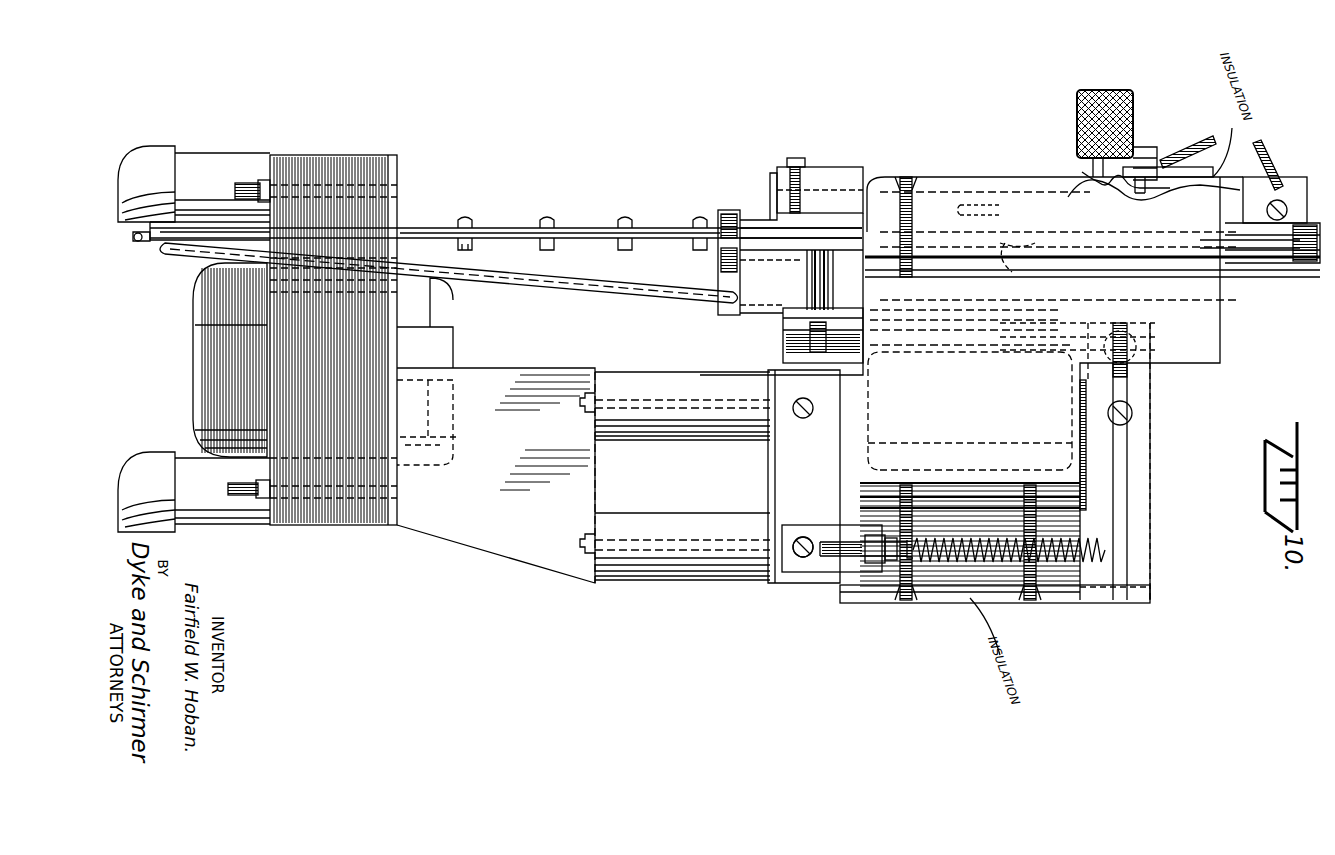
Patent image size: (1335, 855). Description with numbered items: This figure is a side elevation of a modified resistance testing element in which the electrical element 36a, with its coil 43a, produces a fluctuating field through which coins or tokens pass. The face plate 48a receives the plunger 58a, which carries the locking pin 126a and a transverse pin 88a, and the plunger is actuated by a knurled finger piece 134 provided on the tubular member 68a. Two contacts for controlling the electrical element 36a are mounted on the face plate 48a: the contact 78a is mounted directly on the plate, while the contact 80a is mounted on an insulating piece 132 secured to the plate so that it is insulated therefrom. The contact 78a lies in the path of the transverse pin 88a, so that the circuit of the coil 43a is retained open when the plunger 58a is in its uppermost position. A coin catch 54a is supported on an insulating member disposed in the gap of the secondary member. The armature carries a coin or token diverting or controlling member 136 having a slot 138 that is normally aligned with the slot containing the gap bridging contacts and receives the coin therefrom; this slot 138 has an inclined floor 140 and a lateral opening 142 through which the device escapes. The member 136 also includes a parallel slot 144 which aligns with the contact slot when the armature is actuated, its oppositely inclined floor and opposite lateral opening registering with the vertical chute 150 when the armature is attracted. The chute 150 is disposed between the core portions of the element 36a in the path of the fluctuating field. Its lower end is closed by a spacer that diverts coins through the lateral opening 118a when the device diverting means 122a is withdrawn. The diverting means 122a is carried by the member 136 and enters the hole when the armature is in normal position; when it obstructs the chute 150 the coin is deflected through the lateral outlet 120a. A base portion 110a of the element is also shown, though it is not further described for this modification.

The electrical element 36a is at (350, 515).
The coil 43a is at (197, 398).
The lateral outlet 120a is at (185, 252).
The device diverting means 122a is at (537, 282).
The vertical chute 150 is at (517, 230).
The inclined floor 140 is at (736, 240).
The coin or token diverting or controlling member 136 is at (748, 258).
The lateral opening 142 is at (800, 262).
The parallel slot 144 is at (828, 232).
The slot 138 is at (841, 252).
The face plate 48a is at (940, 178).
The locking pin 126a is at (1000, 212).
The coin catch 54a is at (1010, 245).
The transverse pin 88a is at (1082, 172).
The tubular member 68a is at (1072, 195).
The knurled finger piece 134 is at (1100, 90).
The contact 80a is at (1183, 167).
The insulating piece 132 is at (1177, 158).
The plunger 58a is at (1230, 228).
The contact 78a is at (1234, 268).
The lateral opening 118a is at (1203, 363).
The base plate 110a is at (1105, 622).